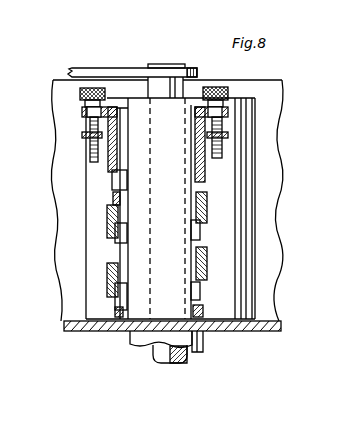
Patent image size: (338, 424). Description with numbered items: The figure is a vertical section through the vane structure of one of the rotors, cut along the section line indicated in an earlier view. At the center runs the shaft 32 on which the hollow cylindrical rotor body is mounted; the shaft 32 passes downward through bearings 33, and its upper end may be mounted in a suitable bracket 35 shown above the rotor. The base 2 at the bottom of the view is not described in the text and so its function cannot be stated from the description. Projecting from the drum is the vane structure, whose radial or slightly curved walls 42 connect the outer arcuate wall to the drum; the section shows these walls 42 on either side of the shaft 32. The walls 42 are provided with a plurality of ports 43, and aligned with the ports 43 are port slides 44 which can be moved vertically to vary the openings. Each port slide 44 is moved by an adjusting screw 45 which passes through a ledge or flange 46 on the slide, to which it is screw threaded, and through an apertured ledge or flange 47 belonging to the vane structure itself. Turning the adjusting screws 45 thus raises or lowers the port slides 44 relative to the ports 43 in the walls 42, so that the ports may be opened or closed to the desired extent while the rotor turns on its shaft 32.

The base plate 2 is at (255, 332).
The shaft 32 is at (160, 67).
The bearings 33 is at (140, 342).
The bracket 35 is at (110, 62).
The radial walls 42 is at (197, 133).
The ports 43 is at (112, 188).
The port slides 44 is at (108, 222).
The adjusting screws 45 is at (90, 150).
The ledges or flanges 46 is at (85, 135).
The apertured ledges or flanges 47 is at (87, 111).